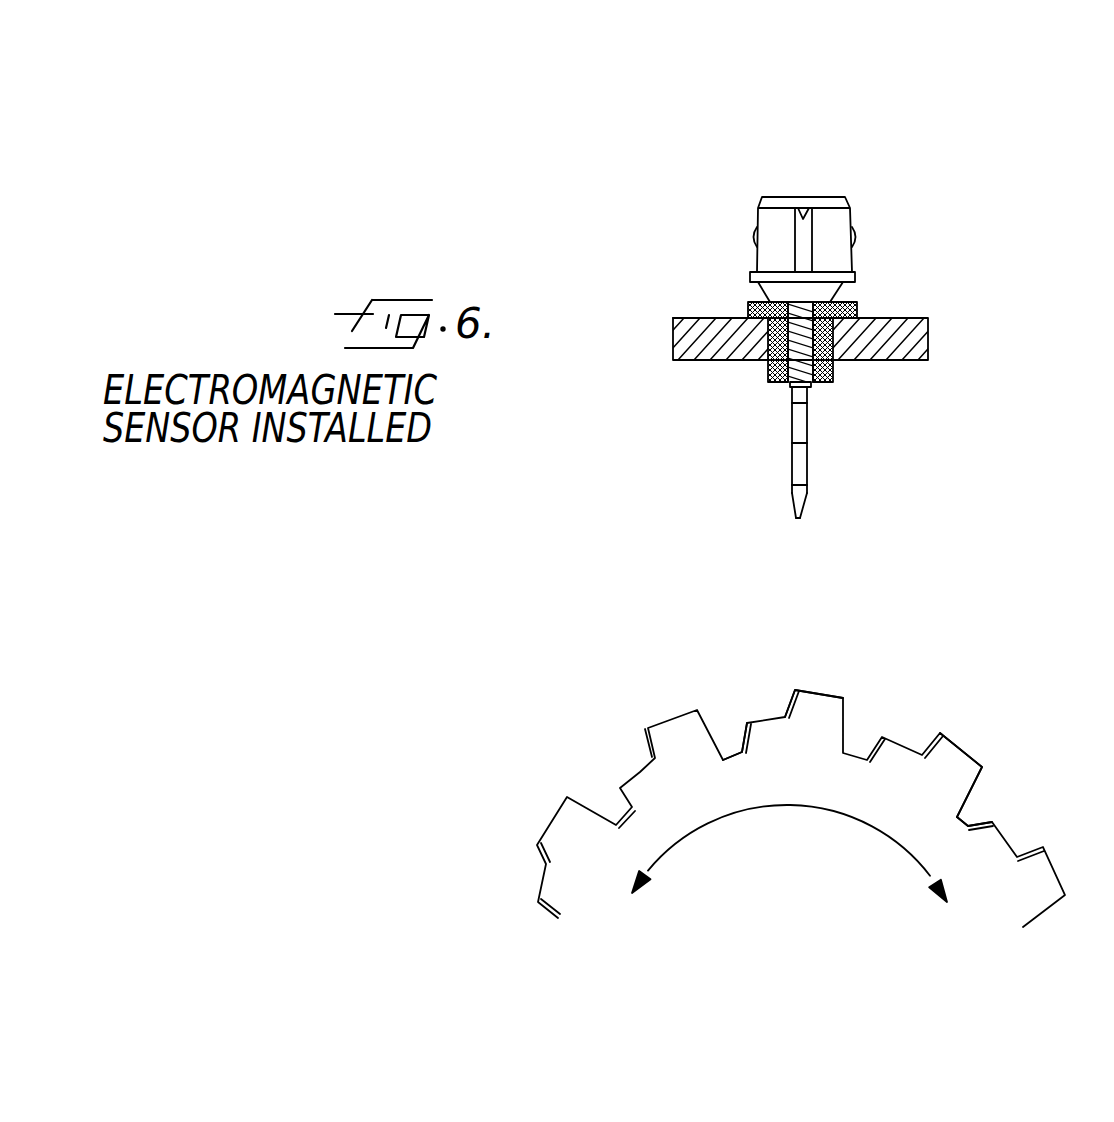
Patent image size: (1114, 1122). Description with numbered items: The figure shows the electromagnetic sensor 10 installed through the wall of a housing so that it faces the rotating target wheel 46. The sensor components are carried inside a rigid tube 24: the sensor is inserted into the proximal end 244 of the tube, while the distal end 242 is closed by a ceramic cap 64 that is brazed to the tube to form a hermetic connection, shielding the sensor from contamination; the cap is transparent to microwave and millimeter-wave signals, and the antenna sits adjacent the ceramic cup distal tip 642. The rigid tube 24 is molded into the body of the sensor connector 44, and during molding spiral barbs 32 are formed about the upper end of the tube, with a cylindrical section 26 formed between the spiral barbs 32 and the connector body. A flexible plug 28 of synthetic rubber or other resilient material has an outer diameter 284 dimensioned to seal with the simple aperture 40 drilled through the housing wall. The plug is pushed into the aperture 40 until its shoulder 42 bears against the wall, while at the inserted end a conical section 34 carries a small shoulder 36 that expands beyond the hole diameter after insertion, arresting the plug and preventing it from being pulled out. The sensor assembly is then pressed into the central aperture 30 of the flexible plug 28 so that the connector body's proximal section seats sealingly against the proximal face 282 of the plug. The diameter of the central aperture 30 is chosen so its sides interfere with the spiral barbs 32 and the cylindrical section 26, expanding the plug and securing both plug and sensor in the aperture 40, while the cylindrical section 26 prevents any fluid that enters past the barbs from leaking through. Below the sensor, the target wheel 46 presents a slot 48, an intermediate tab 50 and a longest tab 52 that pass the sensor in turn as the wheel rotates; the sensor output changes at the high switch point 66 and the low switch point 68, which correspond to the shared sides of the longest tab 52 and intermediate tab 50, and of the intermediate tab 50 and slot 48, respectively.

The sensor 10 is at (742, 157).
The rigid tube 24 is at (808, 433).
The distal end 242 is at (797, 468).
The proximal end 244 is at (808, 388).
The cylindrical section 26 is at (843, 293).
The flexible plug 28 is at (833, 371).
The proximal face 282 is at (853, 303).
The outer diameter 284 is at (772, 127).
The central aperture 30 is at (700, 354).
The spiral barbs 32 is at (771, 380).
The conical section 34 is at (766, 378).
The small shoulder 36 is at (764, 368).
The simple aperture 40 is at (747, 318).
The shoulder 42 is at (748, 305).
The sensor connector 44 is at (837, 222).
The target wheel 46 is at (789, 853).
The slot 48 is at (957, 830).
The intermediate tab 50 is at (640, 778).
The longest tab 52 is at (952, 755).
The ceramic cap 64 is at (805, 498).
The ceramic cup distal tip 642 is at (796, 519).
The high switch point 66 is at (787, 699).
The low switch point 68 is at (742, 740).